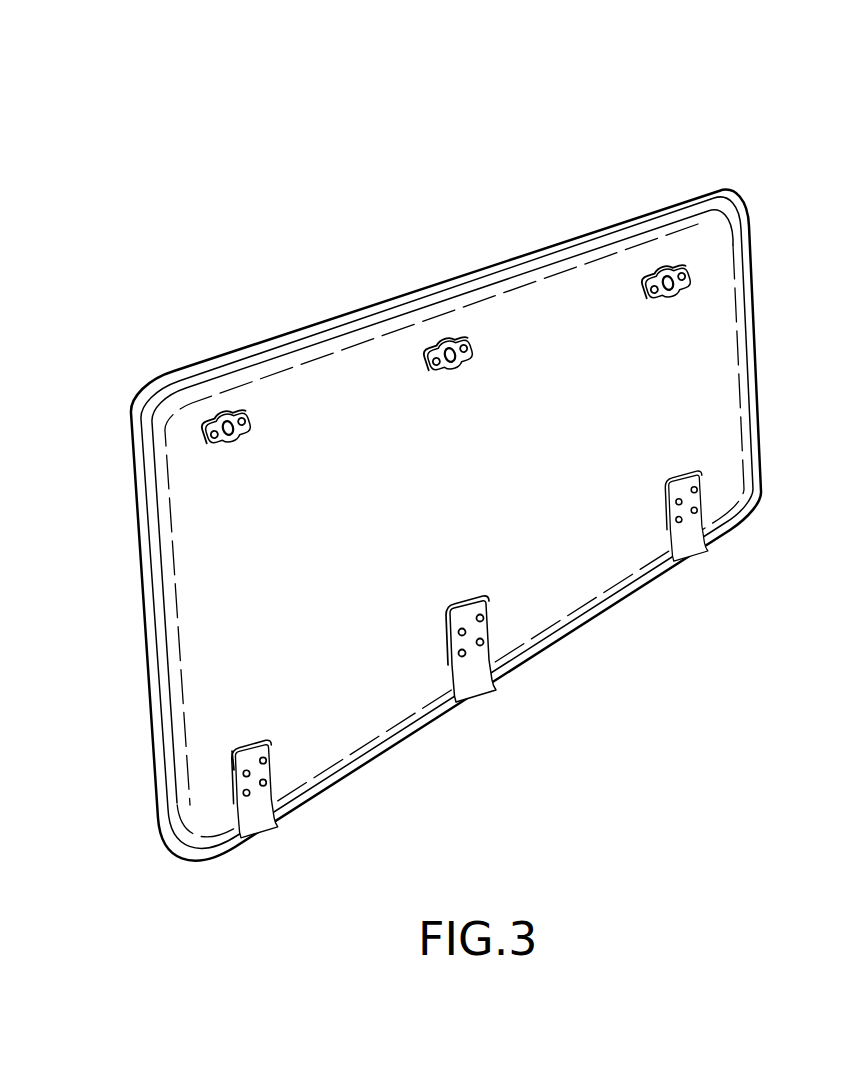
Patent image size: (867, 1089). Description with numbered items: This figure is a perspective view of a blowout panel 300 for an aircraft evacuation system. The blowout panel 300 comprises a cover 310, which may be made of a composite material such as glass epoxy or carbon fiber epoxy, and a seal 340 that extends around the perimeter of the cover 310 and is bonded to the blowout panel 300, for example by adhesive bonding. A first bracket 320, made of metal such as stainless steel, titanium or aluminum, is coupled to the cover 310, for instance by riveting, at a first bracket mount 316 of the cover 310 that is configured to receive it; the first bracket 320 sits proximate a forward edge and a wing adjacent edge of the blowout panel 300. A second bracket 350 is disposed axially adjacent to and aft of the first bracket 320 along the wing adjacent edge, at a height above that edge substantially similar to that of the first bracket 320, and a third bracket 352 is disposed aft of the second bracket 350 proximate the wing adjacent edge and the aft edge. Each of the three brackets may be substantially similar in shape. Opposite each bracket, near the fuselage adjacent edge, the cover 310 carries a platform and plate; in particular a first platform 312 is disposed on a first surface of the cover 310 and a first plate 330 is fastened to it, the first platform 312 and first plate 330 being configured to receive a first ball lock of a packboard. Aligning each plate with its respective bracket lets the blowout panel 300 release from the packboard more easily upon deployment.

The blowout panel 300 is at (349, 152).
The cover 310 is at (185, 605).
The first platform 312 is at (200, 428).
The first bracket mount 316 is at (246, 745).
The first bracket 320 is at (240, 772).
The first plate 330 is at (228, 420).
The seal 340 is at (348, 313).
The second bracket 350 is at (479, 672).
The third bracket 352 is at (690, 542).